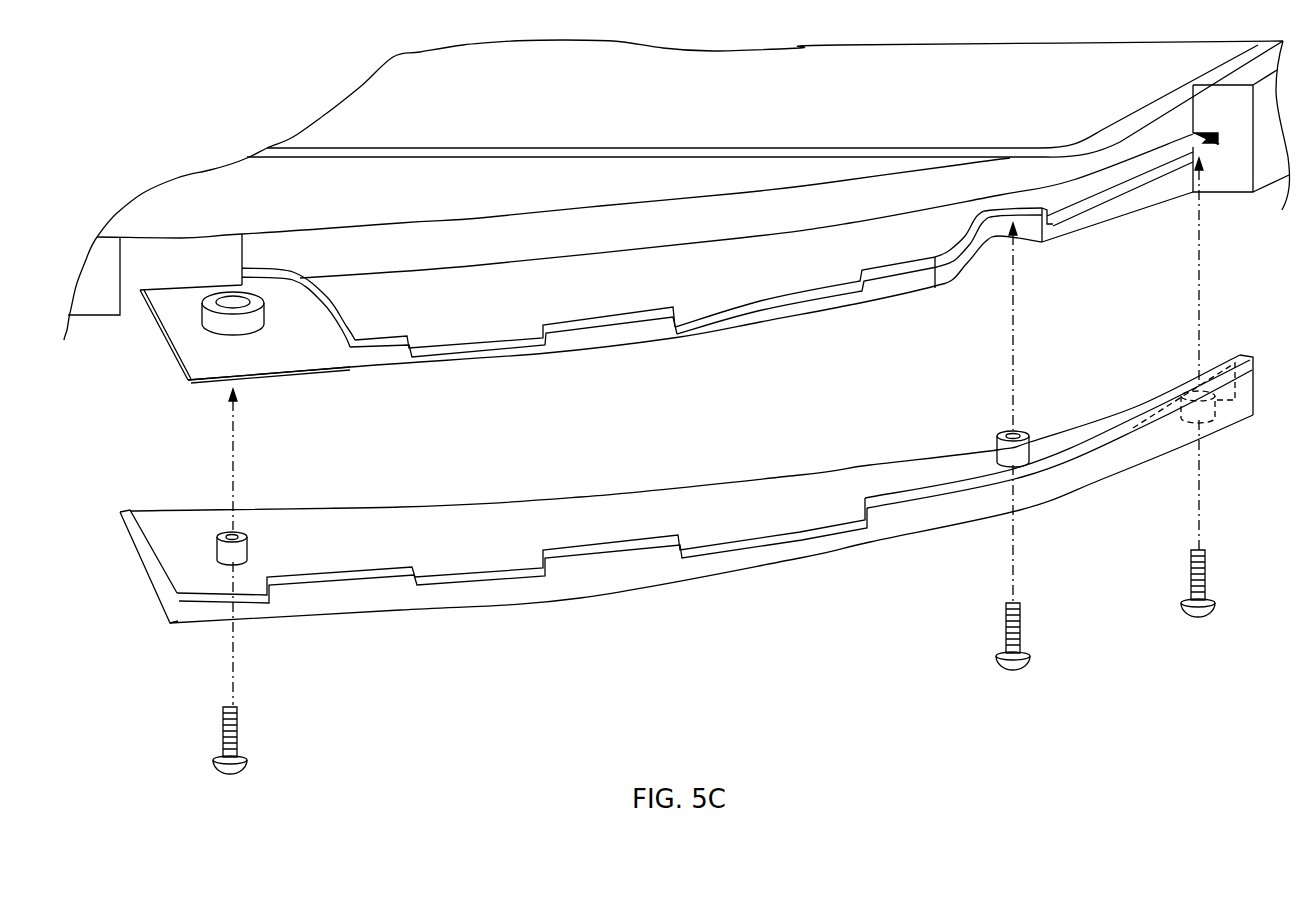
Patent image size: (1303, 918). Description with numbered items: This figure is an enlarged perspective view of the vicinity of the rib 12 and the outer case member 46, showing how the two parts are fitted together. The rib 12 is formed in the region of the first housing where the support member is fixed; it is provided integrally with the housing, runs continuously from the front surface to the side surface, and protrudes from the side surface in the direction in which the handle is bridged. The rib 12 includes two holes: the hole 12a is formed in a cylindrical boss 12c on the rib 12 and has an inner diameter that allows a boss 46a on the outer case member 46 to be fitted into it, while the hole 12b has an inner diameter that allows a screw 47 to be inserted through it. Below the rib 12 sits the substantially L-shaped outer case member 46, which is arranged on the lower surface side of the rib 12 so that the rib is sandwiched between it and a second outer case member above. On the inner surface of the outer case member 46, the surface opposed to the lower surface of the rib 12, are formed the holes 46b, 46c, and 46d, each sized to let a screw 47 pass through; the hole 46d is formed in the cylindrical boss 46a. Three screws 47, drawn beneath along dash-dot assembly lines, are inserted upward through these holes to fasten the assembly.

The rib 12 is at (588, 298).
The hole 12a is at (198, 303).
The hole 12b is at (1220, 146).
The cylindrical boss 12c is at (255, 322).
The outer case member 46 is at (1153, 463).
The boss 46a is at (243, 548).
The hole 46b is at (1185, 383).
The hole 46c is at (1003, 433).
The hole 46d is at (228, 532).
The screw 47 is at (248, 765).